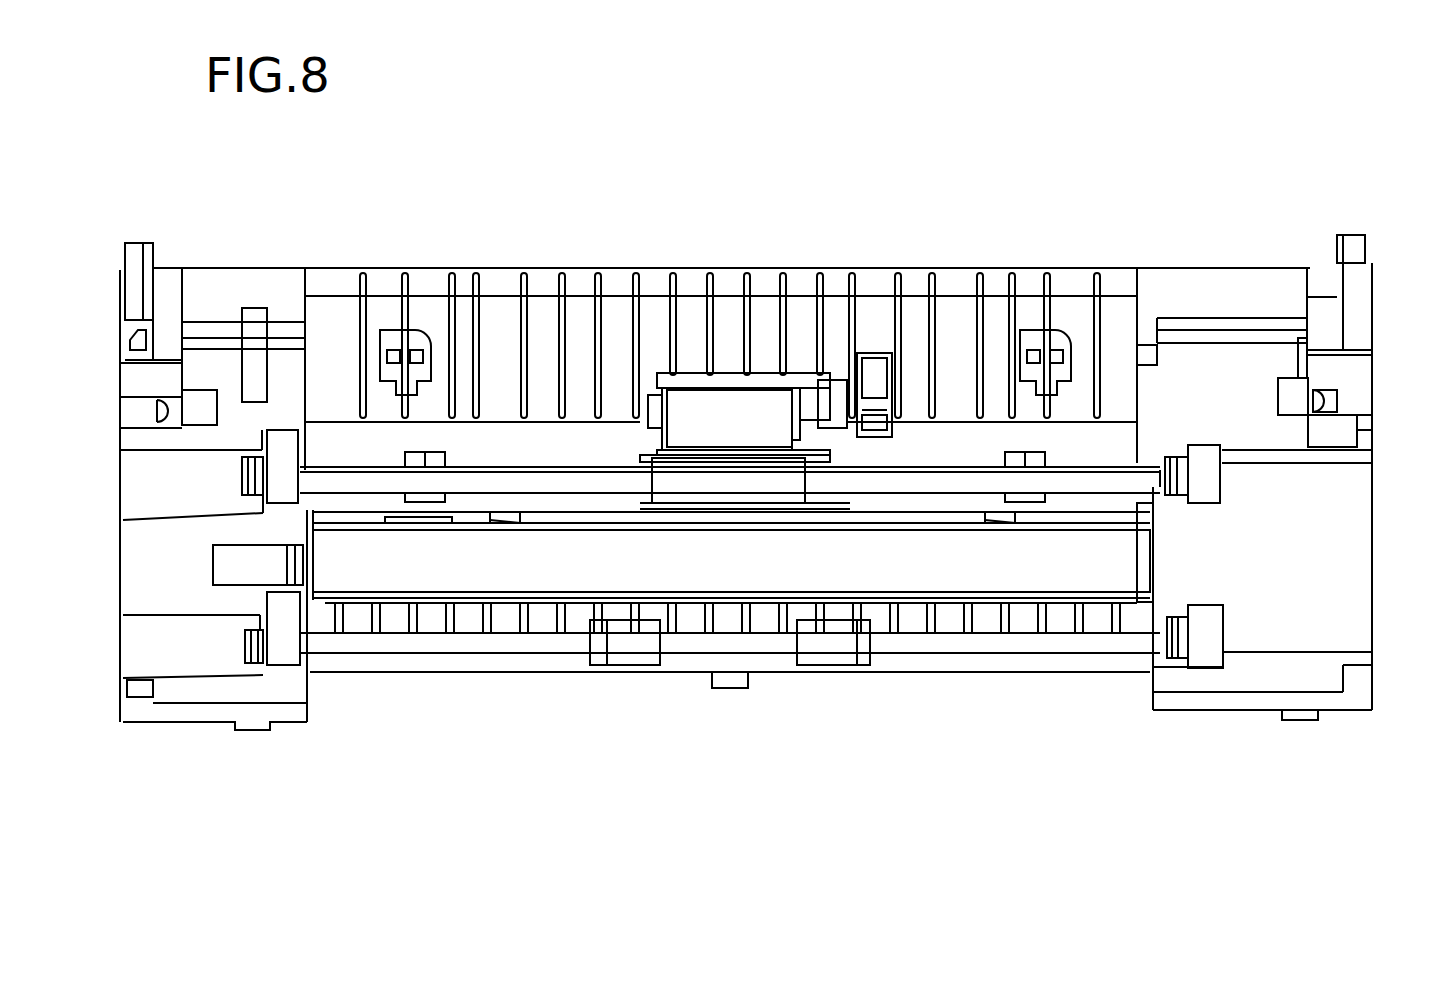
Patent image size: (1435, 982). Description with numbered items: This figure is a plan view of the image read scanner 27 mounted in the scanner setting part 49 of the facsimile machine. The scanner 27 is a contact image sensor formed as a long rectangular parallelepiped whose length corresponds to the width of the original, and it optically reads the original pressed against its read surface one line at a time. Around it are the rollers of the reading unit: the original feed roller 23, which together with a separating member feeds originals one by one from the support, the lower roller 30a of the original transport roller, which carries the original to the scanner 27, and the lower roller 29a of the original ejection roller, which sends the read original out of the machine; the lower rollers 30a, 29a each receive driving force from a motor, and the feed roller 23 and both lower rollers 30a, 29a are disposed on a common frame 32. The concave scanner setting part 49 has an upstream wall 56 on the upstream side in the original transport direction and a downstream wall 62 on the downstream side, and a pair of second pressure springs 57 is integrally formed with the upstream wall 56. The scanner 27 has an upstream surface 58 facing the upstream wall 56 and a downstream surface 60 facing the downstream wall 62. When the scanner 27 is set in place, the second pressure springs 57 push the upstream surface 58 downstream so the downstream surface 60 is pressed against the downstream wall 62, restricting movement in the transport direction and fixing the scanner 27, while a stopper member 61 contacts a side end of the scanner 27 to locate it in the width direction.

The original feed roller 23 is at (720, 405).
The image read scanner 27 is at (498, 585).
The lower roller 29a is at (633, 658).
The lower roller 30a is at (732, 488).
The frame 32 is at (581, 288).
The scanner setting part 49 is at (1128, 558).
The upstream wall 56 is at (557, 530).
The second pressure spring 57 is at (514, 520).
The upstream surface 58 is at (587, 534).
The downstream surface 60 is at (892, 598).
The stopper member 61 is at (214, 569).
The downstream wall 62 is at (942, 600).